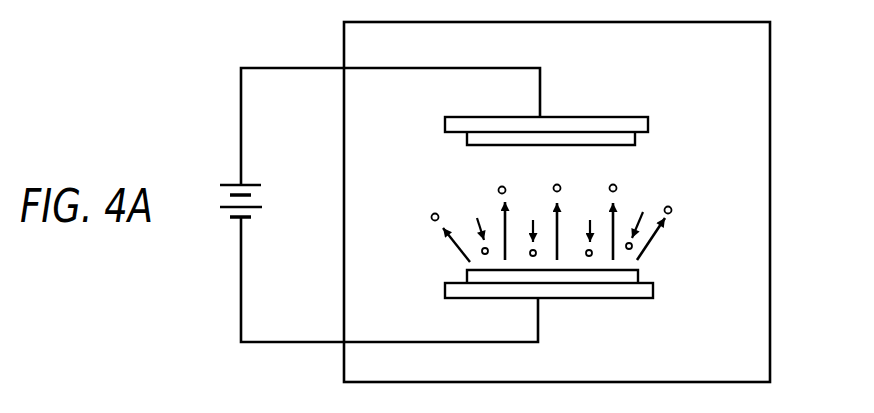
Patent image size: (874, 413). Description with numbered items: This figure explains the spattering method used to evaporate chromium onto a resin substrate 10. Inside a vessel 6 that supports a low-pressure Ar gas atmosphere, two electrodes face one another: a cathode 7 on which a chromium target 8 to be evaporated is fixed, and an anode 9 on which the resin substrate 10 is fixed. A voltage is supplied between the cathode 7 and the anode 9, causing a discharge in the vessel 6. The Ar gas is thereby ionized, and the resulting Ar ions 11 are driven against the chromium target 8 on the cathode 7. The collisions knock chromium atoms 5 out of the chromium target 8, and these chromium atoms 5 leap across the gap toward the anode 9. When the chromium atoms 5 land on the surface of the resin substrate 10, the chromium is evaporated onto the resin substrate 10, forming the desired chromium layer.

The chromium atoms 5 is at (498, 190).
The vessel 6 is at (770, 62).
The cathode 7 is at (620, 298).
The chromium target 8 is at (642, 275).
The anode 9 is at (568, 117).
The resin substrate 10 is at (635, 138).
The Ar ions 11 is at (481, 251).